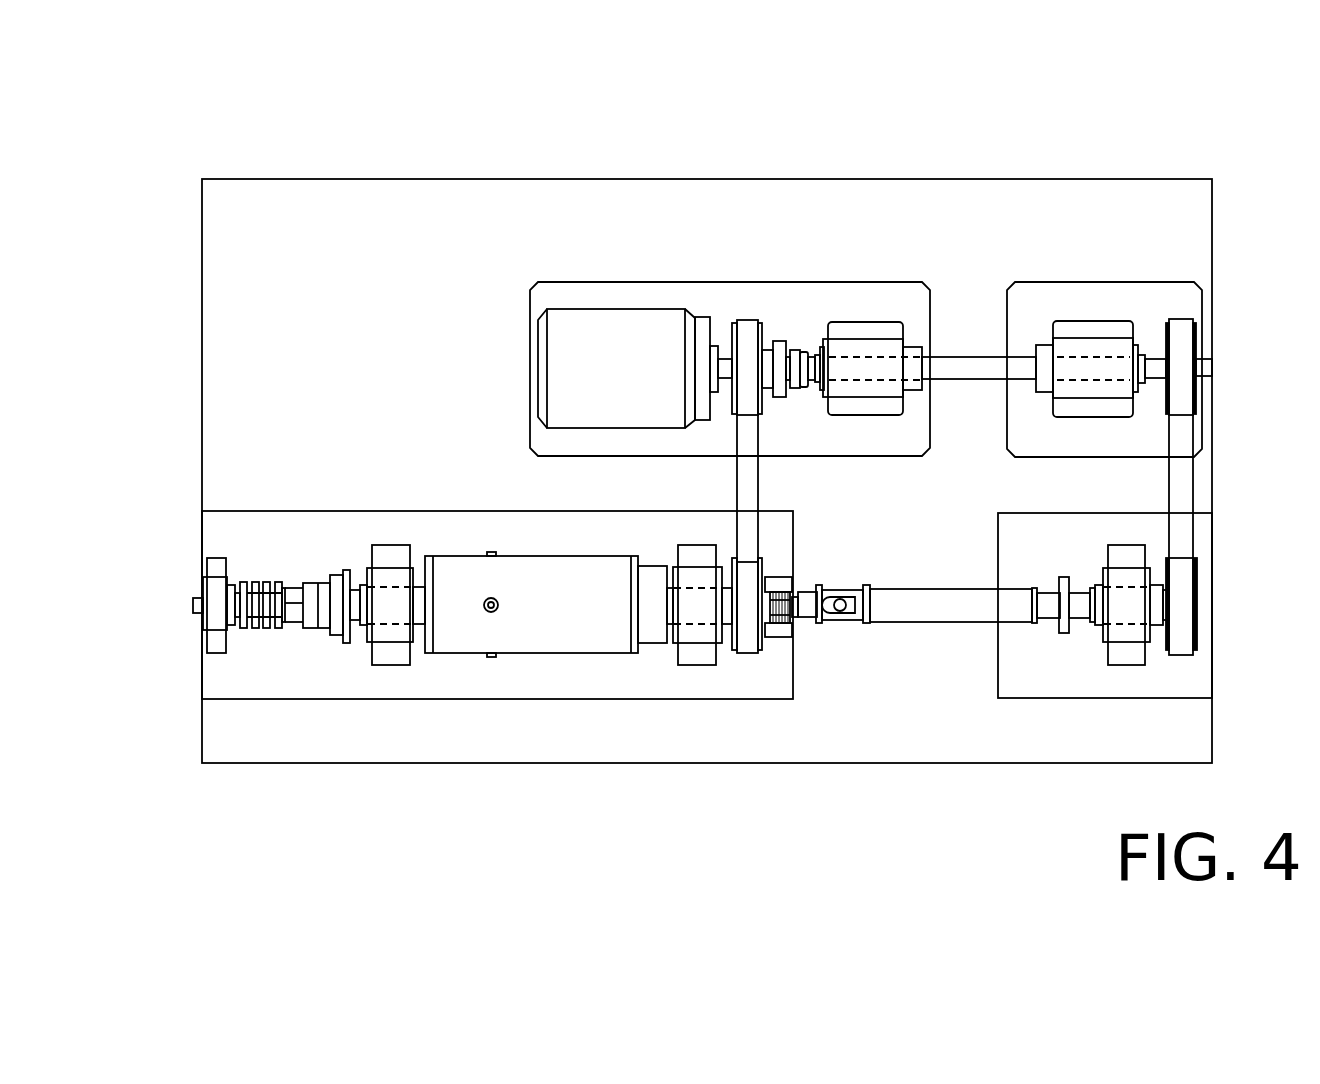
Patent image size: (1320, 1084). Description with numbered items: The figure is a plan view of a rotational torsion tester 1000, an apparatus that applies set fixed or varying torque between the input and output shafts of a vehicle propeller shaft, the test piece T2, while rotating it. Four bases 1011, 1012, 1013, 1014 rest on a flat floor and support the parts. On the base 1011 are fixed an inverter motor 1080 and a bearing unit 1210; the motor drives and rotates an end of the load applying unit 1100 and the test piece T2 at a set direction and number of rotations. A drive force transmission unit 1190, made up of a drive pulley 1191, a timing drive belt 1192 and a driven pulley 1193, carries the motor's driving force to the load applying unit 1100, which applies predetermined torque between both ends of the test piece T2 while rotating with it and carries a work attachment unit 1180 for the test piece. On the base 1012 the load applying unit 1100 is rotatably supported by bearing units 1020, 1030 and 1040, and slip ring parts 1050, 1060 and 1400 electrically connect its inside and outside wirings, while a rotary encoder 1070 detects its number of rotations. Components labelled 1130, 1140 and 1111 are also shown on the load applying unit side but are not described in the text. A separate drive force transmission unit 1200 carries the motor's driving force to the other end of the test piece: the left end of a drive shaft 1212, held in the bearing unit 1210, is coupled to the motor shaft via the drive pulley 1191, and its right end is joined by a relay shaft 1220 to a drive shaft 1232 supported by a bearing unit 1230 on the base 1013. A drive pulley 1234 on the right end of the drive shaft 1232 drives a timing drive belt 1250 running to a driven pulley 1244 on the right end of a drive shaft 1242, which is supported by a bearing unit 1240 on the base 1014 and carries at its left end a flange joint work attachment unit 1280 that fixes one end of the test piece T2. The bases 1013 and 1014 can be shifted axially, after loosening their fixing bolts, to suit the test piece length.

The rotational torsion tester 1000 is at (1180, 157).
The drive force transmission unit 1200 is at (972, 220).
The base 1011 is at (618, 281).
The base 1013 is at (1112, 280).
The inverter motor 1080 is at (560, 360).
The drive force transmission unit 1190 is at (745, 318).
The drive pulley 1191 is at (765, 333).
The drive belt 1192 is at (735, 490).
The driven pulley 1193 is at (765, 648).
The bearing unit 1210 is at (876, 398).
The drive shaft 1212 is at (873, 340).
The relay shaft 1220 is at (963, 352).
The bearing unit 1230 is at (1088, 400).
The drive shaft 1232 is at (1152, 358).
The drive pulley 1234 is at (1197, 340).
The drive belt 1250 is at (1193, 482).
The driven pulley 1244 is at (1197, 582).
The base 1012 is at (483, 511).
The base 1014 is at (1128, 698).
The bearing unit 1040 is at (198, 582).
The slip ring part 1060 is at (190, 604).
The slip ring part 1050 is at (267, 578).
The rod 1140 is at (301, 592).
The rotary encoder 1070 is at (346, 648).
The shaft 1130 is at (385, 635).
The bearing unit 1030 is at (390, 560).
The load applying unit 1100 is at (588, 655).
The fixing portion 1111 is at (498, 605).
The bearing unit 1020 is at (707, 645).
The slip ring part 1400 is at (780, 578).
The work attachment unit 1180 is at (805, 630).
The test piece T2 is at (950, 592).
The work attachment unit 1280 is at (1078, 625).
The bearing unit 1240 is at (1127, 645).
The drive shaft 1242 is at (1130, 585).